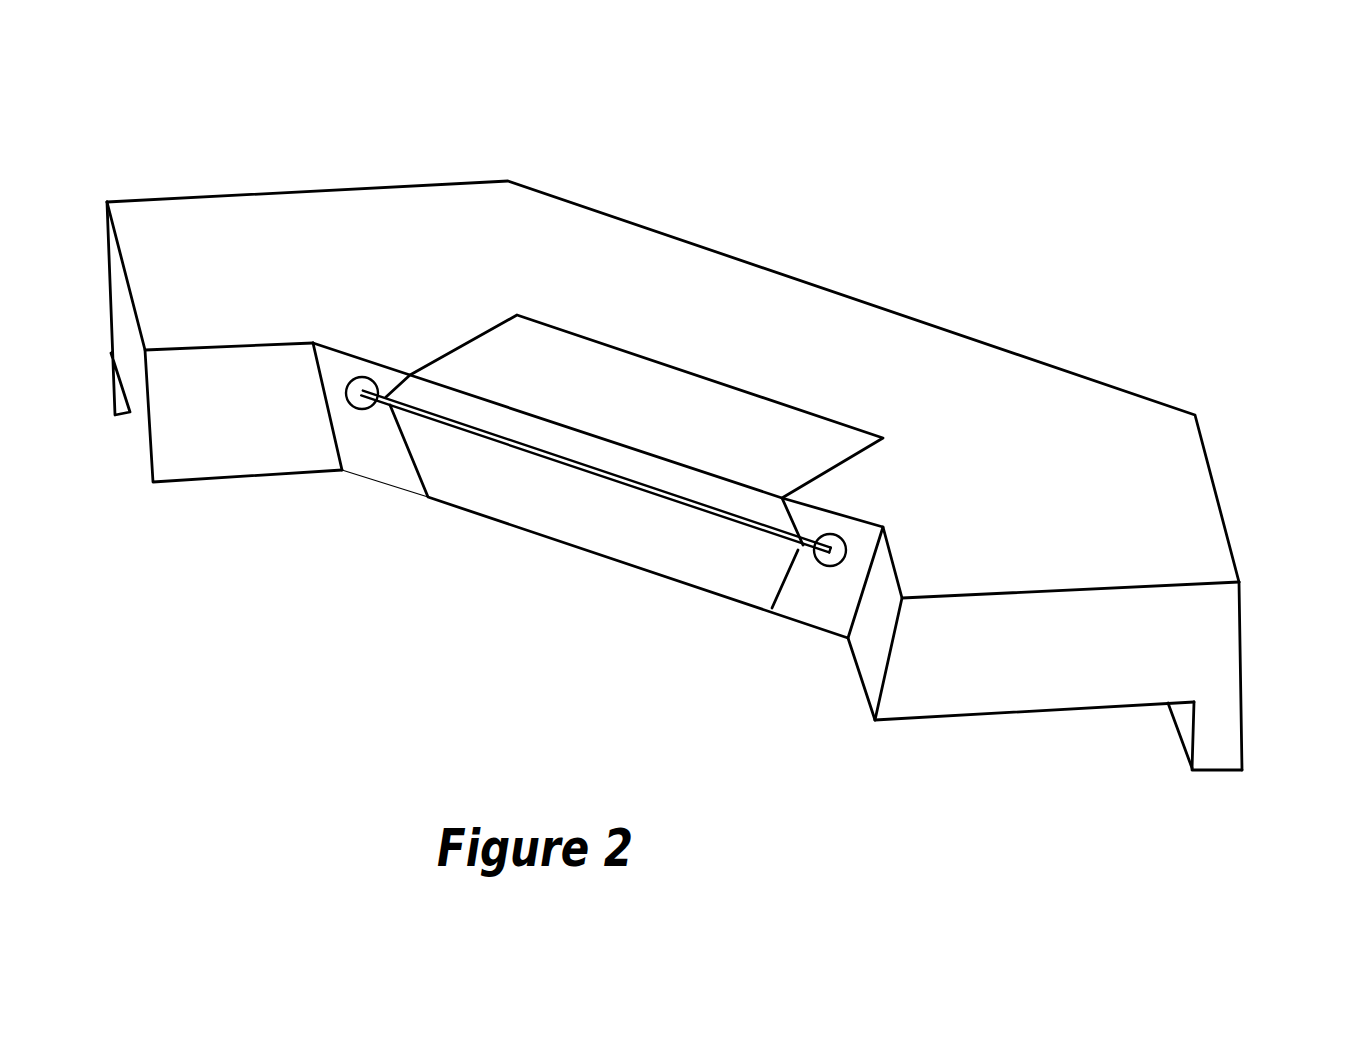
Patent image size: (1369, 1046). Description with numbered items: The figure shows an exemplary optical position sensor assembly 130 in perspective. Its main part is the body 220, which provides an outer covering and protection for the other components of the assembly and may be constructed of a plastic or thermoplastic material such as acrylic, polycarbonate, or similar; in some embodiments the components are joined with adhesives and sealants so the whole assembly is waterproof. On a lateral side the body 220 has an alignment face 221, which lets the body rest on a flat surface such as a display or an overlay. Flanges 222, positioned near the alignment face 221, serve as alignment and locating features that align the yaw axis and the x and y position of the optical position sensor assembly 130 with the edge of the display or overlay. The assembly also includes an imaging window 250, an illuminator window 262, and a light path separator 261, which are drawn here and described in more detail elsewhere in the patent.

The optical position sensor assembly 130 is at (1043, 107).
The body 220 is at (412, 225).
The alignment face 221 is at (142, 455).
The flanges 222 is at (117, 400).
The imaging window 250 is at (558, 510).
The light path separator 261 is at (716, 517).
The illuminator window 262 is at (610, 460).